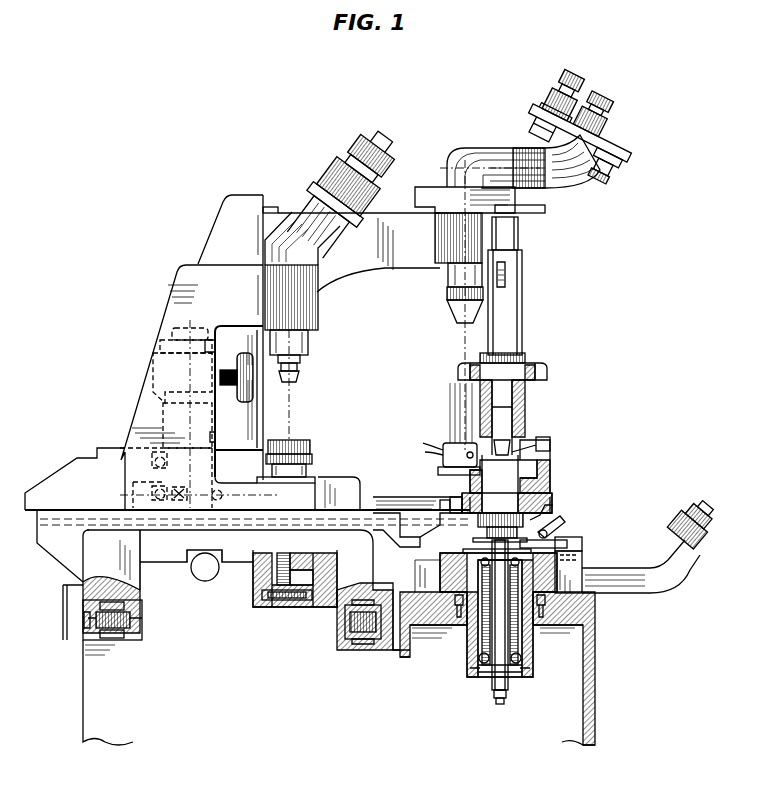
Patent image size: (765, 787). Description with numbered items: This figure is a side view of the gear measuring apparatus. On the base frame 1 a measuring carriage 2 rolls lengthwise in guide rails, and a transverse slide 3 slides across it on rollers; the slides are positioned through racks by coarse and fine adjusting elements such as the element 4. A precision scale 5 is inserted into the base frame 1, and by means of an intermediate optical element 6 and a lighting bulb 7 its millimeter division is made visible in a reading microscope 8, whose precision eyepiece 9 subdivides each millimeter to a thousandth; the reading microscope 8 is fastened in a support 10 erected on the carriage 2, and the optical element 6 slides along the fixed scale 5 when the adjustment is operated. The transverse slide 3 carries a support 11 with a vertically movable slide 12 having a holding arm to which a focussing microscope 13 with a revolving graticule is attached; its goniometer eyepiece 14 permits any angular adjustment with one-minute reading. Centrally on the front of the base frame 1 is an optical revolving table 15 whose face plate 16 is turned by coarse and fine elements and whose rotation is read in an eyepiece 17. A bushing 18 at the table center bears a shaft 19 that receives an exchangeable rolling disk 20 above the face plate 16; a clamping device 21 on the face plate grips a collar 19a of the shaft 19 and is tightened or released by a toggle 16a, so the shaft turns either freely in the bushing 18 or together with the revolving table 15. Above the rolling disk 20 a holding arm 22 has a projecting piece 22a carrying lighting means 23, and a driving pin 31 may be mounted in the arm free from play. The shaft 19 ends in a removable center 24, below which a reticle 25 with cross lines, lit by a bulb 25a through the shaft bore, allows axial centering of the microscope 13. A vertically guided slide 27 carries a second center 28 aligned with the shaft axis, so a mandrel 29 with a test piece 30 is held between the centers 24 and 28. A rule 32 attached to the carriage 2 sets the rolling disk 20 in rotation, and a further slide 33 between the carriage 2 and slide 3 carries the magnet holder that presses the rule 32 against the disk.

The base frame 1 is at (95, 692).
The measuring carriage 2 is at (93, 550).
The transverse slide 3 is at (68, 473).
The adjusting element 4 is at (170, 362).
The precision scale 5 is at (300, 607).
The intermediate optical element 6 is at (303, 467).
The lighting bulb 7 is at (205, 478).
The reading microscope 8 is at (298, 348).
The precision eyepiece 9 is at (332, 190).
The support 10 is at (184, 285).
The support 11 is at (237, 212).
The slide 12 is at (272, 206).
The focussing microscope 13 is at (463, 160).
The goniometer eyepiece 14 is at (620, 145).
The optical revolving table 15 is at (583, 572).
The face plate 16 is at (583, 556).
The toggle 16a is at (562, 520).
The eyepiece 17 is at (668, 578).
The bushing 18 is at (534, 660).
The shaft 19 is at (466, 660).
The collar 19a is at (550, 536).
The rolling disk 20 is at (542, 510).
The clamping device 21 is at (573, 540).
The holding arm 22 is at (552, 474).
The projecting piece 22a is at (437, 472).
The lighting means 23 is at (445, 444).
The removable center 24 is at (511, 455).
The reticle 25 is at (488, 522).
The bulb 25a is at (497, 690).
The slide 27 is at (546, 209).
The second center 28 is at (519, 228).
The mandrel 29 is at (523, 298).
The test piece 30 is at (548, 368).
The driving pin 31 is at (551, 443).
The rule 32 is at (458, 503).
The slide 33 is at (432, 510).